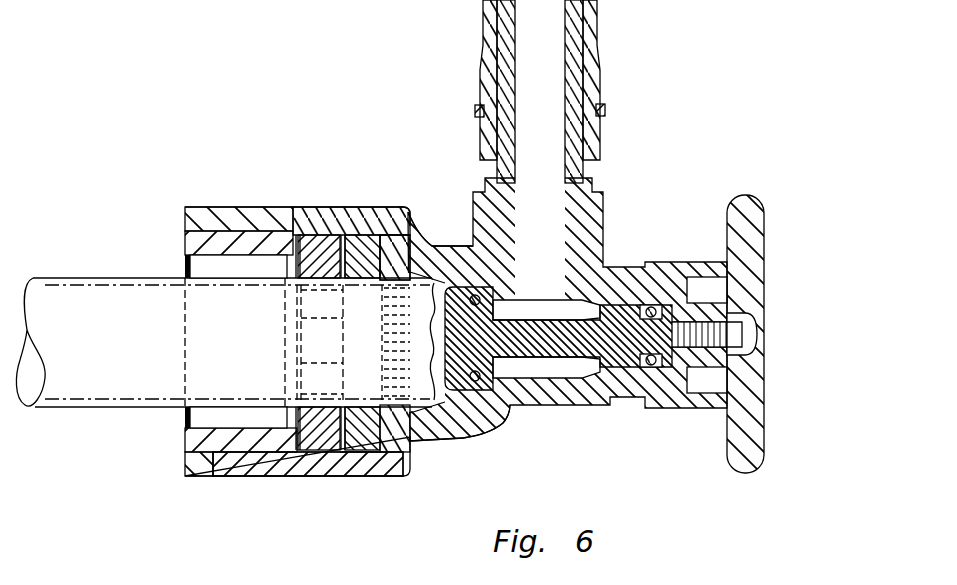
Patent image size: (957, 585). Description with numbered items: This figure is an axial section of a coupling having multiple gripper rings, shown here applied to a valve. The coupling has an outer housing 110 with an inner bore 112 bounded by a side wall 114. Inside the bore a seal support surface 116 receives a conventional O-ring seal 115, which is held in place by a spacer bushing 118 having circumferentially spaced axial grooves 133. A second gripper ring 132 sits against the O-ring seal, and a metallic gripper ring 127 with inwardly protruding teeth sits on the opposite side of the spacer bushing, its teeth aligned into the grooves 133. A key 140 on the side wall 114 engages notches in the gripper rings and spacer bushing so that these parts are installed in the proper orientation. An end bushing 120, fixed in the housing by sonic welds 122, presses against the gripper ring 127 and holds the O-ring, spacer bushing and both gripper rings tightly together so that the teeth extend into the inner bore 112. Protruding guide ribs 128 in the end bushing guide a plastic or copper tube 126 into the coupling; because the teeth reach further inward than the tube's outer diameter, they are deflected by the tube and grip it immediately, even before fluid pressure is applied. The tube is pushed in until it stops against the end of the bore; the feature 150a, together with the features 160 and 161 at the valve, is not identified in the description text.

The outer housing 110 is at (296, 470).
The inner bore 112 is at (443, 438).
The side wall 114 is at (233, 455).
The O-ring seal 115 is at (406, 222).
The seal support surface 116 is at (402, 440).
The spacer bushing 118 is at (358, 240).
The end bushing 120 is at (186, 455).
The sonic welds 122 is at (210, 462).
The tube 126 is at (92, 297).
The gripper ring 127 is at (300, 245).
The guide ribs 128 is at (262, 240).
The second gripper ring 132 is at (392, 240).
The axial grooves 133 is at (348, 455).
The key 140 is at (330, 235).
The sleeve 150a is at (317, 240).
The stem nut 160 is at (600, 55).
The o-ring 161 is at (605, 110).